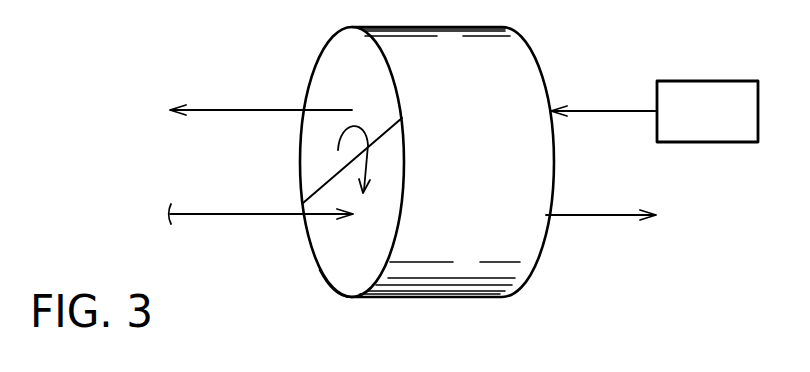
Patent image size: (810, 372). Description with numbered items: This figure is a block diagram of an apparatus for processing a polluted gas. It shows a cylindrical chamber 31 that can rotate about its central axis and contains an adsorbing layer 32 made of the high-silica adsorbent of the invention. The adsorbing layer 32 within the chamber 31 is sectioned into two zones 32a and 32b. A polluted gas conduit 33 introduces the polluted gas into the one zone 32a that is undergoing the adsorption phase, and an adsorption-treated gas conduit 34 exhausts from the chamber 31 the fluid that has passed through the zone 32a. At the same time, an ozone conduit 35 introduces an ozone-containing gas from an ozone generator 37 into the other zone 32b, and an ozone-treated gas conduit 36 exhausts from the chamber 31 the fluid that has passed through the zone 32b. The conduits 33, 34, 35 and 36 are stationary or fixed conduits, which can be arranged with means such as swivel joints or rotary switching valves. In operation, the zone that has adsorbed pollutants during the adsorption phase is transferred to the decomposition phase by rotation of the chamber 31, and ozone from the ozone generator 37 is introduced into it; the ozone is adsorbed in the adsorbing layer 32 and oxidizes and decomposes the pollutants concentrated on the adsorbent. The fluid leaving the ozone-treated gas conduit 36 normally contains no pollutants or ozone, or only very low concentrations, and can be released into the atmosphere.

The cylindrical chamber 31 is at (430, 298).
The adsorbing layer 32 is at (527, 243).
The zone 32a is at (337, 272).
The zone 32b is at (338, 70).
The polluted gas conduit 33 is at (260, 212).
The adsorption-treated gas conduit 34 is at (598, 217).
The ozone conduit 35 is at (600, 110).
The ozone-treated gas conduit 36 is at (213, 112).
The ozone generator 37 is at (710, 143).